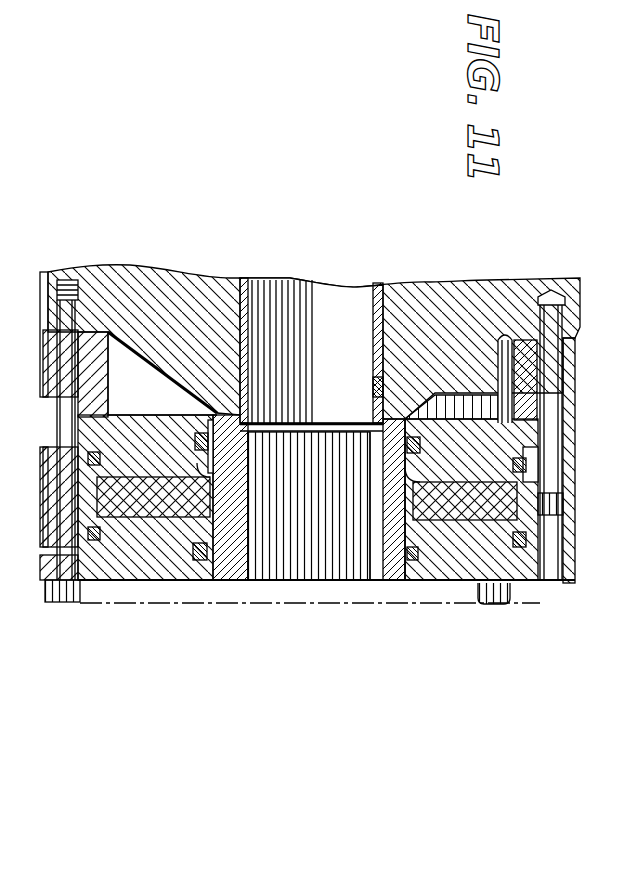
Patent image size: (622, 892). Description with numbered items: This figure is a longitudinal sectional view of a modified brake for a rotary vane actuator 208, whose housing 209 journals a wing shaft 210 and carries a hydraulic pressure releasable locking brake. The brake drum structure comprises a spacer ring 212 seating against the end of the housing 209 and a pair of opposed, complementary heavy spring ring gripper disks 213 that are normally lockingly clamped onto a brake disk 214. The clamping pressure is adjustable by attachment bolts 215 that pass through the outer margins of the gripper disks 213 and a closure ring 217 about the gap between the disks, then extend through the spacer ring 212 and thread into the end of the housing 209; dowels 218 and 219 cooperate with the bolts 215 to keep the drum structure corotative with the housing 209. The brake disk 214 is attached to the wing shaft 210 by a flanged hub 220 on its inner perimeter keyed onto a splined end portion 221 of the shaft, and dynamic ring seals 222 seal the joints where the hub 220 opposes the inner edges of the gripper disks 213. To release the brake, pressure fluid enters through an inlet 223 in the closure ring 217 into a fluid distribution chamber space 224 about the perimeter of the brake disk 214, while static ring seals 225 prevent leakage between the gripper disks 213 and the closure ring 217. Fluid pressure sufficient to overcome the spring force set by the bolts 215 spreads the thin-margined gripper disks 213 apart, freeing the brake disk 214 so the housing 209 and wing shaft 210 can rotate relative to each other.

The rotary vane actuator 208 is at (569, 272).
The housing 209 is at (522, 283).
The wing shaft 210 is at (332, 298).
The spacer ring 212 is at (560, 394).
The gripper disks 213 is at (565, 440).
The brake disk 214 is at (455, 575).
The bolts 215 is at (60, 523).
The closure ring 217 is at (43, 490).
The dowel 218 is at (548, 572).
The dowel 219 is at (557, 370).
The flanged hub 220 is at (385, 565).
The splined end portion 221 is at (302, 550).
The dynamic ring seals 222 is at (170, 420).
The inlet 223 is at (568, 500).
The fluid distribution chamber space 224 is at (537, 573).
The static ring seals 225 is at (42, 457).